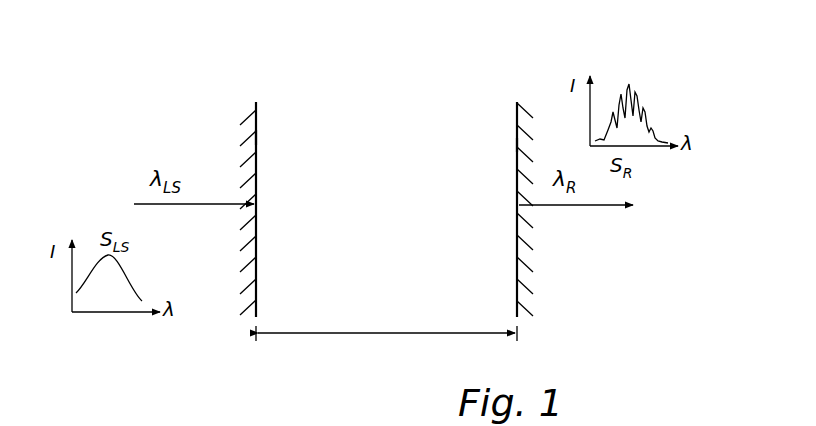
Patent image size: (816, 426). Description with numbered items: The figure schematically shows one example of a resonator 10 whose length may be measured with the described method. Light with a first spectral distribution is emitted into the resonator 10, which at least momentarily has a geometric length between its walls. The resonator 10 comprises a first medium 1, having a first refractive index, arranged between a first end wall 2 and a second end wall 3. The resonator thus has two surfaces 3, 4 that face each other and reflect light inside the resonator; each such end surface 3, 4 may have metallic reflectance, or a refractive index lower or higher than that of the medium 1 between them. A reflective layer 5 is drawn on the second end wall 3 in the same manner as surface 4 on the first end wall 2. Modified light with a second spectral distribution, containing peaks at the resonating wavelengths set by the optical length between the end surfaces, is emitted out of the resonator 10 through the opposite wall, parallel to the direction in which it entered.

The first medium 1 is at (458, 113).
The first end wall 2 is at (233, 306).
The second end wall 3 is at (529, 303).
The reflecting surface 4 is at (257, 137).
The reflective coating of second mirror 5 is at (517, 145).
The resonator 10 is at (288, 95).